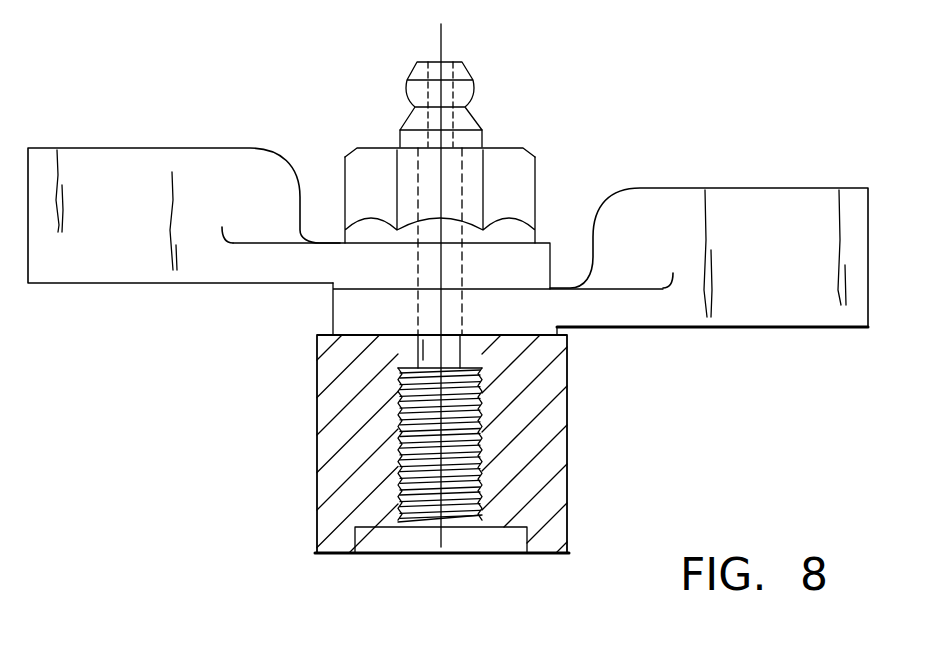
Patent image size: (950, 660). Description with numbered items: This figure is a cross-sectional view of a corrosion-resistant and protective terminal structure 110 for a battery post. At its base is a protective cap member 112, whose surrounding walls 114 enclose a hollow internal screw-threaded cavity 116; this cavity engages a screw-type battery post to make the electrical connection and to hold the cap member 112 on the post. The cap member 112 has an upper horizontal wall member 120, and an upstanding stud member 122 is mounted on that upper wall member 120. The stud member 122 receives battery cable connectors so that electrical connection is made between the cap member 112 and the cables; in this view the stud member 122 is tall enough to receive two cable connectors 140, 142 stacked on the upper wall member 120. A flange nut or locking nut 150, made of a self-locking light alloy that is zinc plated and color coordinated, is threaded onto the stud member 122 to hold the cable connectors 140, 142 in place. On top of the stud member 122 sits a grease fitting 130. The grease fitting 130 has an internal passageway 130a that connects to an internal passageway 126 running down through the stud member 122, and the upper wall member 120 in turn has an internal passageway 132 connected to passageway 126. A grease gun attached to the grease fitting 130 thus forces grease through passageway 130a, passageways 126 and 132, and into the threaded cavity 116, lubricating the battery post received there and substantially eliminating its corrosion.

The terminal structure 110 is at (540, 331).
The protective cap member 112 is at (567, 470).
The surrounding walls 114 is at (327, 520).
The screw-threaded cavity 116 is at (453, 510).
The upper horizontal wall member 120 is at (330, 382).
The upstanding stud member 122 is at (372, 158).
The internal passageway 126 is at (463, 200).
The grease fitting 130 is at (473, 82).
The internal passageway of grease fitting 130a is at (443, 148).
The internal passageway of upper wall member 132 is at (425, 345).
The battery cable connector 140 is at (814, 277).
The battery cable connector 142 is at (134, 227).
The flange nut 150 is at (358, 190).